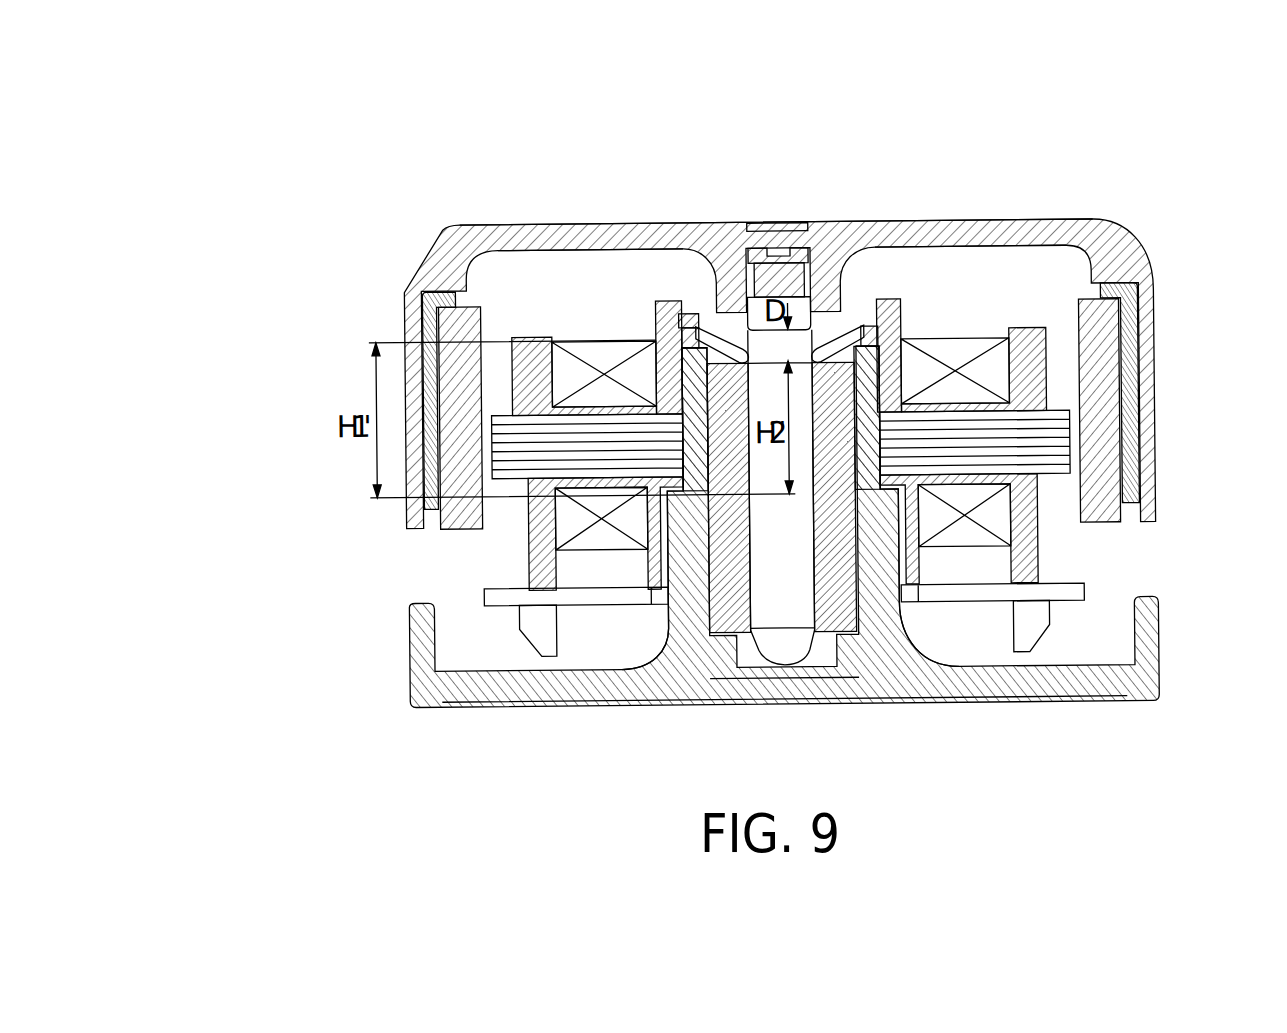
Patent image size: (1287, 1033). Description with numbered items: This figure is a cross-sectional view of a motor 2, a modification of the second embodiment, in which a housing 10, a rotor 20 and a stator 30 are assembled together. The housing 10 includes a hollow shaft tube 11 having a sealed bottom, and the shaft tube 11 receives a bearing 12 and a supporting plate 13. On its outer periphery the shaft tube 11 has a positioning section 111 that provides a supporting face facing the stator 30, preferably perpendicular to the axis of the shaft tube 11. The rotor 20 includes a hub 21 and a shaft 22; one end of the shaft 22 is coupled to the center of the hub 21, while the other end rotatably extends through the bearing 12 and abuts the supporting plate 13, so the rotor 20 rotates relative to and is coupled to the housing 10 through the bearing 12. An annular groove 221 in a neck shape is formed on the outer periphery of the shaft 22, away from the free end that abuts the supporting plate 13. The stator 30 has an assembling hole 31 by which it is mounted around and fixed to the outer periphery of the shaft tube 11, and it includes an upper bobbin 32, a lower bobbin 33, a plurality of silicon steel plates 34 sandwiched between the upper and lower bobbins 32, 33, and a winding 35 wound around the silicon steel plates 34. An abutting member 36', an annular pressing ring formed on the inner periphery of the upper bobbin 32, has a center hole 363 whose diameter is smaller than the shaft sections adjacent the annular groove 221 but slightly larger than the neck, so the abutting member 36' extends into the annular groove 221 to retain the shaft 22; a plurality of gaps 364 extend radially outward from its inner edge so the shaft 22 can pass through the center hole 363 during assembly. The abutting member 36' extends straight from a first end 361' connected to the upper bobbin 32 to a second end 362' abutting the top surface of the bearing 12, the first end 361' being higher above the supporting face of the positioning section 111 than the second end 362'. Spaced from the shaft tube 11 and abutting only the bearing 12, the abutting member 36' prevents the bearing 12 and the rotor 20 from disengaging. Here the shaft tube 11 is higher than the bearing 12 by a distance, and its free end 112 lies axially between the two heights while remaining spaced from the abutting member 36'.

The motor 2 is at (706, 407).
The housing 10 is at (830, 563).
The shaft tube 11 is at (843, 321).
The positioning section 111 is at (895, 470).
The free end 112 is at (680, 325).
The bearing 12 is at (720, 575).
The supporting plate 13 is at (719, 640).
The rotor 20 is at (820, 448).
The hub 21 is at (890, 223).
The shaft 22 is at (792, 607).
The annular groove 221 is at (734, 221).
The stator 30 is at (701, 428).
The assembling hole 31 is at (821, 320).
The upper bobbin 32 is at (520, 348).
The lower bobbin 33 is at (533, 548).
The silicon steel plates 34 is at (497, 467).
The winding 35 is at (585, 342).
The abutting member 36' is at (639, 199).
The first end 361' is at (614, 224).
The second end 362' is at (678, 229).
The center hole 363 is at (805, 330).
The gaps 364 is at (838, 345).